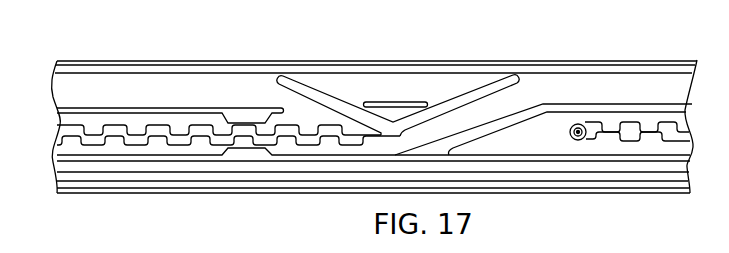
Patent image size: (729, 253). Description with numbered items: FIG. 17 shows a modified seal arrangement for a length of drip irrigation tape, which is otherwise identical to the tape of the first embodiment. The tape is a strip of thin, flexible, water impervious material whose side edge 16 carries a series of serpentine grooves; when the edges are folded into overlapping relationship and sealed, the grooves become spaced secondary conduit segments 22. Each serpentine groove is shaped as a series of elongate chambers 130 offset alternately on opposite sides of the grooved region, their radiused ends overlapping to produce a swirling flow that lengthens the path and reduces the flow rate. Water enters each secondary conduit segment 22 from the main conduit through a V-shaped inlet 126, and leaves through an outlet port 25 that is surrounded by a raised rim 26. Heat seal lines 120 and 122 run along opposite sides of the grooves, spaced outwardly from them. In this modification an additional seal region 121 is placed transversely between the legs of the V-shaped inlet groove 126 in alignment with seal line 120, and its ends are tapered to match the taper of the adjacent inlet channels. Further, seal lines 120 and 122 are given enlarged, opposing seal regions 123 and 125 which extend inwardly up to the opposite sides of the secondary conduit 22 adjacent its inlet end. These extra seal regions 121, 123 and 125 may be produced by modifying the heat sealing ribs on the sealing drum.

The side edge 16 is at (608, 173).
The heat seal line 120 is at (115, 108).
The enlarged seal region 123 is at (248, 110).
The elongate chambers 130 is at (205, 128).
The inlets 126 is at (302, 82).
The additional seal region 121 is at (387, 101).
The raised rim 26 is at (577, 123).
The outlet port 25 is at (587, 127).
The secondary conduit segment 22 is at (639, 122).
The enlarged seal region 125 is at (257, 156).
The heat seal line 122 is at (177, 162).